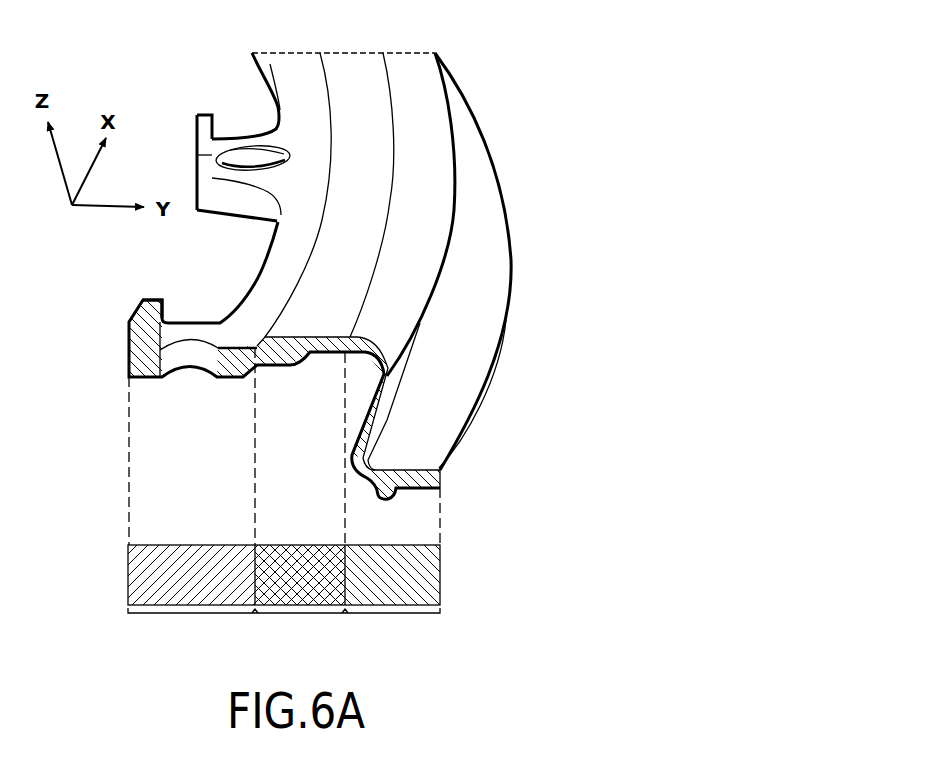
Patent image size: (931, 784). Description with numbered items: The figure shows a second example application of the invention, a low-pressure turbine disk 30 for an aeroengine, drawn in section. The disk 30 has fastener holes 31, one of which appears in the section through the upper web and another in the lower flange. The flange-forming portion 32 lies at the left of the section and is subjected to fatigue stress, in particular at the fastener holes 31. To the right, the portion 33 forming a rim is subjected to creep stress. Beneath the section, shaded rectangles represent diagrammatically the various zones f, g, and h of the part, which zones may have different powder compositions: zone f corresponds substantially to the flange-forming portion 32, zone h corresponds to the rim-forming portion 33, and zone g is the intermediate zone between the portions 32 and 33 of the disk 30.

The low-pressure turbine disk 30 is at (540, 36).
The fastener holes 31 is at (252, 157).
The flange-forming portion 32 is at (122, 310).
The rim-forming portion 33 is at (486, 433).